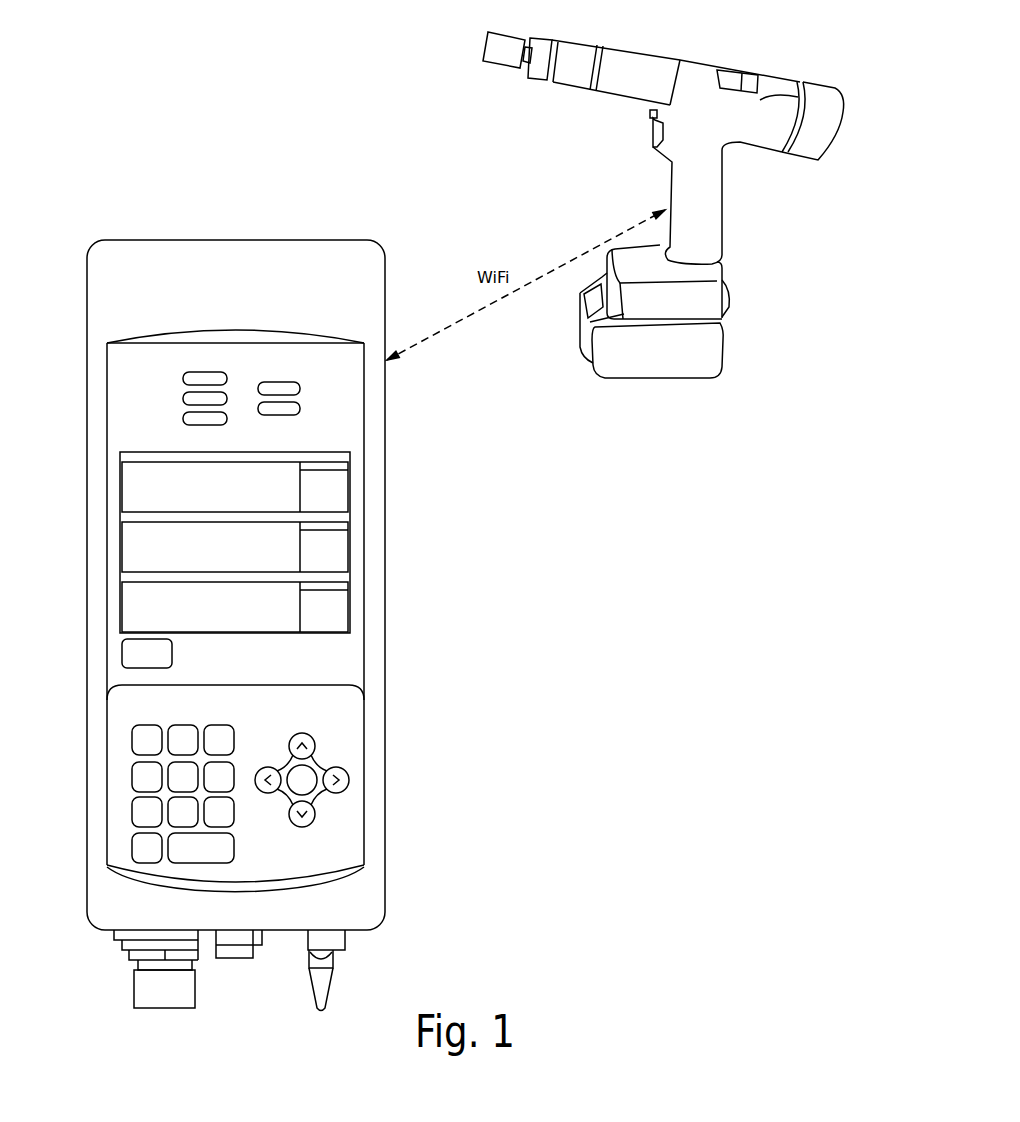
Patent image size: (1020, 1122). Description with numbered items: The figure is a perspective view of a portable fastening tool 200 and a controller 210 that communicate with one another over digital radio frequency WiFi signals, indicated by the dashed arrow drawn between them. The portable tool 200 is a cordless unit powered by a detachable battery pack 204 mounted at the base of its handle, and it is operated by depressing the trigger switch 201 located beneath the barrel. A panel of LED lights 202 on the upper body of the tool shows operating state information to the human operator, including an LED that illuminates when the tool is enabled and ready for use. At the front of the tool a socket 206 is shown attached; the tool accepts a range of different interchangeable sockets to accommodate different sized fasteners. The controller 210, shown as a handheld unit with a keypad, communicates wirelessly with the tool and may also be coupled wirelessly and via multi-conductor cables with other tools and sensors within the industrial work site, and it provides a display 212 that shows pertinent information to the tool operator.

The portable tool 200 is at (567, 146).
The trigger switch 201 is at (653, 147).
The panel of LED lights 202 is at (733, 70).
The detachable battery pack 204 is at (656, 380).
The socket 206 is at (500, 67).
The controller 210 is at (431, 820).
The display 212 is at (352, 488).